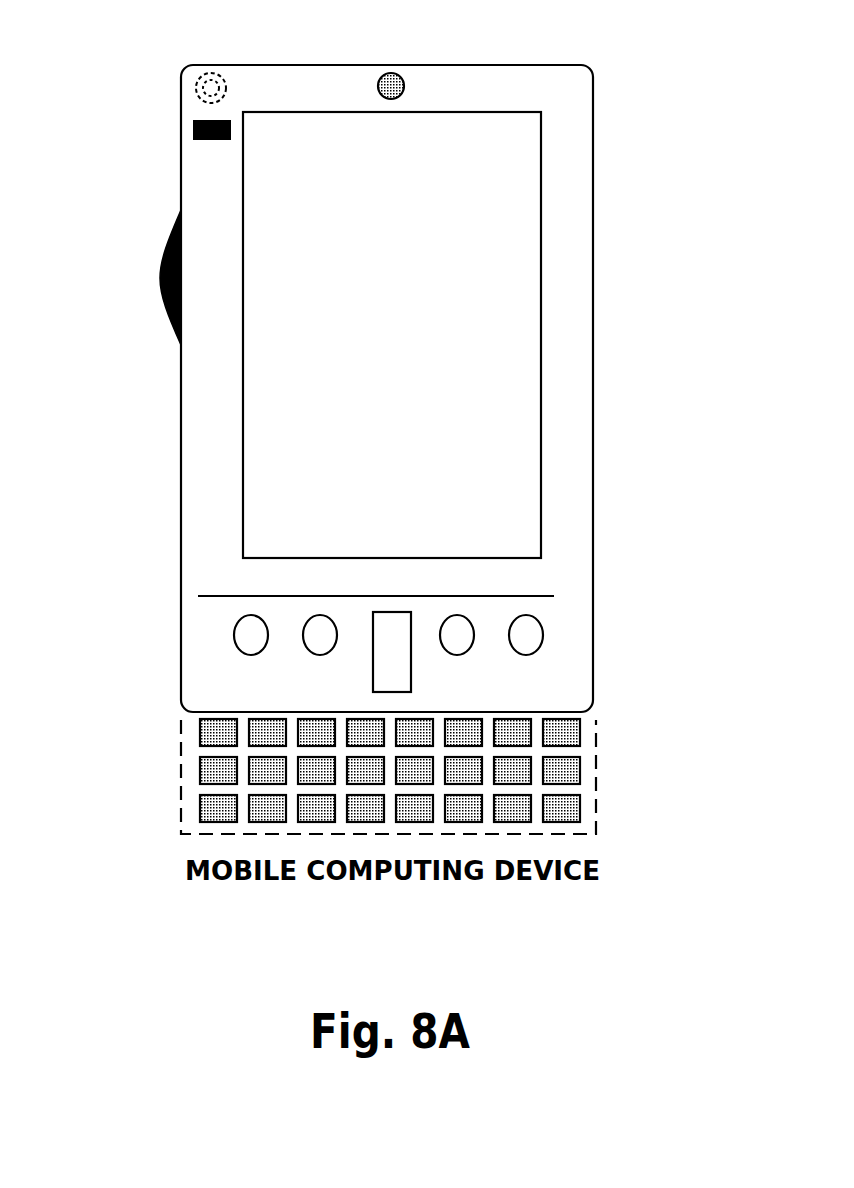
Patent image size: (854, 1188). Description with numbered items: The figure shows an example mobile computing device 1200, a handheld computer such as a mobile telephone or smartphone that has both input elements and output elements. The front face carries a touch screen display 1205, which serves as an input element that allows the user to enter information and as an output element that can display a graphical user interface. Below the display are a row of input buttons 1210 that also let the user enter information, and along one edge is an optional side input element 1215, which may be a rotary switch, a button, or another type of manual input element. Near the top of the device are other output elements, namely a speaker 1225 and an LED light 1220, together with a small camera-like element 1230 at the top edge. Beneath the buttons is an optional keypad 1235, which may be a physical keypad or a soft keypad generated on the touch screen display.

The mobile computing device 1200 is at (594, 80).
The touch screen display 1205 is at (266, 495).
The input buttons 1210 is at (530, 648).
The side input element 1215 is at (158, 290).
The LED light 1220 is at (192, 125).
The speaker 1225 is at (197, 80).
The camera 1230 is at (402, 80).
The keypad 1235 is at (180, 805).